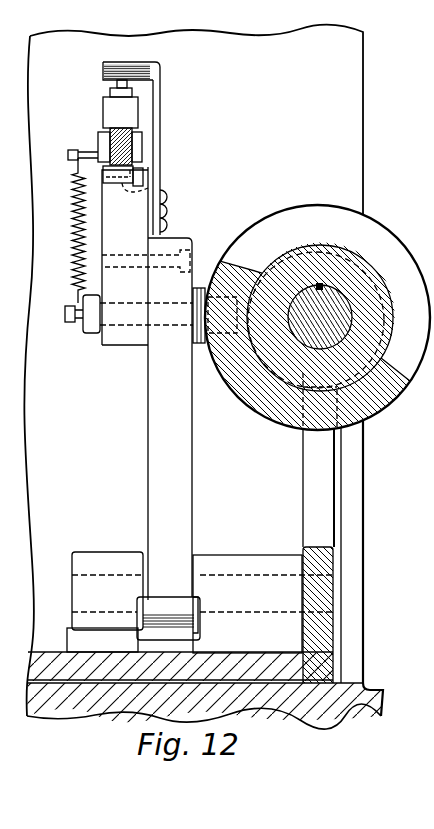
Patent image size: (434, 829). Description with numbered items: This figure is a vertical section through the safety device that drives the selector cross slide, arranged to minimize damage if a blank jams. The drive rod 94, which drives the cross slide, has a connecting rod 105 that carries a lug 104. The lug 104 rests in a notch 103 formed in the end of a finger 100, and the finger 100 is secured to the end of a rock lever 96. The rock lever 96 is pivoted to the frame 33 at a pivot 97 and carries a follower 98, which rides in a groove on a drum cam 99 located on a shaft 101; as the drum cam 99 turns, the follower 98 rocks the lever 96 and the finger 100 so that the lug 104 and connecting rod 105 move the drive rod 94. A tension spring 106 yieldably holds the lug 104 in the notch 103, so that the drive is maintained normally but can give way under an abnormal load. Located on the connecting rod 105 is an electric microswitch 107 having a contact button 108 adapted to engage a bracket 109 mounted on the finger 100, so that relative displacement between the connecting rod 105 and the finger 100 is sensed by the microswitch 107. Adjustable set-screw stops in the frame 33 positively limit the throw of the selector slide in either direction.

The frame 33 is at (365, 96).
The drive rod 94 is at (137, 152).
The rock lever 96 is at (158, 450).
The pivot 97 is at (212, 575).
The follower 98 is at (228, 337).
The drum cam 99 is at (270, 400).
The finger 100 is at (130, 215).
The shaft 101 is at (343, 300).
The notch 103 is at (130, 187).
The lug 104 is at (142, 183).
The connecting rod 105 is at (127, 143).
The tension spring 106 is at (80, 228).
The electric microswitch 107 is at (116, 105).
The contact button 108 is at (112, 84).
The bracket 109 is at (128, 51).